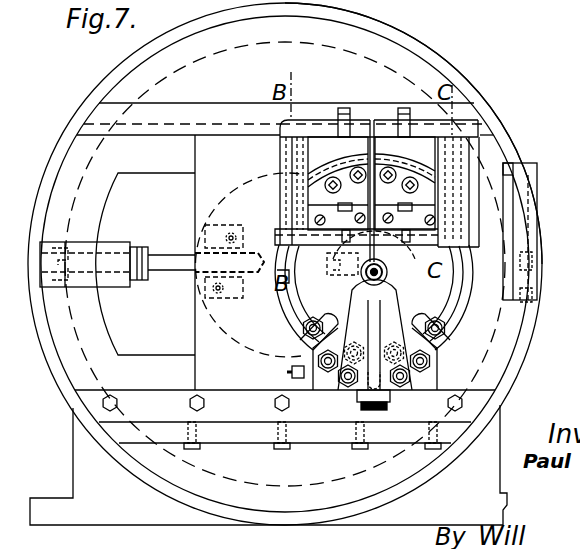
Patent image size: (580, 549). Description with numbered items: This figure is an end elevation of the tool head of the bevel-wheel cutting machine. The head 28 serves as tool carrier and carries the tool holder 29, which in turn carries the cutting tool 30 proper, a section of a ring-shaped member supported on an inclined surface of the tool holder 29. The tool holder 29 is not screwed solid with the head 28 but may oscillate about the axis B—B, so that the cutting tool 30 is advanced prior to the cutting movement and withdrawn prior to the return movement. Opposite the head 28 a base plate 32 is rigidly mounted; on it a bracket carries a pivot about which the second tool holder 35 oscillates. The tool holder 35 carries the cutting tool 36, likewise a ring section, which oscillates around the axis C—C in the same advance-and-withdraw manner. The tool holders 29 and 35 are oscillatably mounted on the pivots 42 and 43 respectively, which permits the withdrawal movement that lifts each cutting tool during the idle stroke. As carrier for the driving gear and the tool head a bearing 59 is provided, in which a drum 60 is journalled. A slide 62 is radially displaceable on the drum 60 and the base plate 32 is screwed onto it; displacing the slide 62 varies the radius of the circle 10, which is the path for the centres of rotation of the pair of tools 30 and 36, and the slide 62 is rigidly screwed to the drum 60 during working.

The circle 10 is at (249, 346).
The head 28 is at (420, 226).
The tool holder 29 is at (313, 195).
The cutting tool 30 is at (325, 180).
The base plate 32 is at (430, 382).
The second tool holder 35 is at (428, 143).
The cutting tool 36 is at (435, 173).
The pivot 42 is at (272, 143).
The pivot 43 is at (440, 152).
The bearing 59 is at (472, 45).
The drum 60 is at (383, 103).
The slide 62 is at (248, 265).